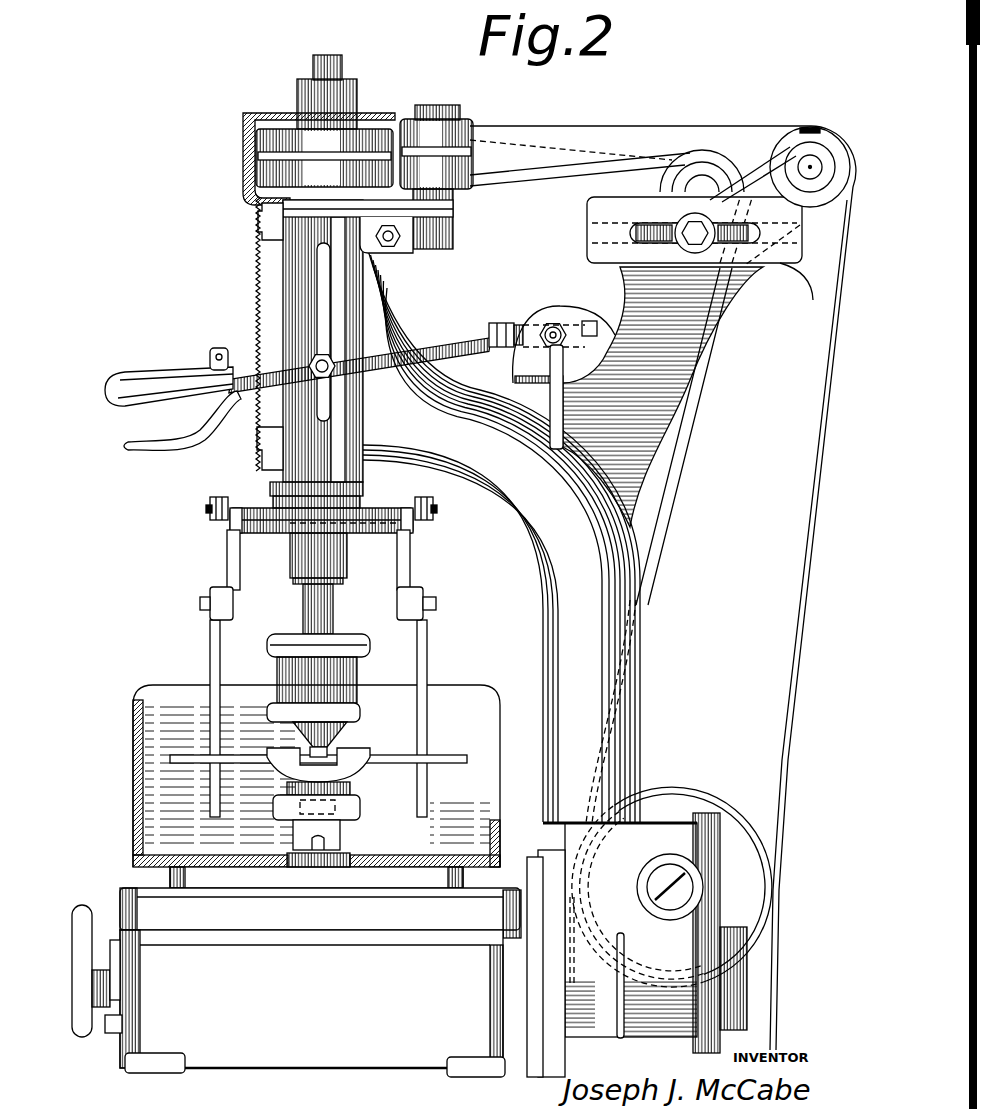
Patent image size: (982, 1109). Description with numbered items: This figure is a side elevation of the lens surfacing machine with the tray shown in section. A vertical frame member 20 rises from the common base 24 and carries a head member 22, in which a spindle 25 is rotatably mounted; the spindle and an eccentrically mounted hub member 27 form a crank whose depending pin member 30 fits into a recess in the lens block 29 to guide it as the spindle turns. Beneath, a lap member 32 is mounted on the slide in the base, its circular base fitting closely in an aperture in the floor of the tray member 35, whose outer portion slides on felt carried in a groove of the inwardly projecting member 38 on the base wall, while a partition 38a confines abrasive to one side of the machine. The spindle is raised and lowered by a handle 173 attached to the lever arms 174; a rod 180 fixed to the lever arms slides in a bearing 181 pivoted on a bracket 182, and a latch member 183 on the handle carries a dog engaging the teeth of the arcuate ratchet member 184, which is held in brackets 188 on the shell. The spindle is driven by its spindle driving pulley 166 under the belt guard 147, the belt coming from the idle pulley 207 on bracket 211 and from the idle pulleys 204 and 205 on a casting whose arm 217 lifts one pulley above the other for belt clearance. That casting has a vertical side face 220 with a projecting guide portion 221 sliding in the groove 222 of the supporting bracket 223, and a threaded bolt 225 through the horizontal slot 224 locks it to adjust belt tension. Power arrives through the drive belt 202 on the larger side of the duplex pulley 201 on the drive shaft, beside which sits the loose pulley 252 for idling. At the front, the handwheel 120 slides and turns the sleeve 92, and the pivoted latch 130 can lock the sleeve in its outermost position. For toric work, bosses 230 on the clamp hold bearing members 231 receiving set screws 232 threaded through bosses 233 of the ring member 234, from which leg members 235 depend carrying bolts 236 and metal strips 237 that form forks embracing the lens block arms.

The spindle driving pulley 166 is at (373, 130).
The belt guard 147 is at (243, 131).
The idle pulley 207 is at (467, 140).
The bracket 211 is at (450, 233).
The head member 22 is at (283, 465).
The bracket 188 is at (262, 212).
The arcuate ratchet member 184 is at (256, 275).
The lever arm 174 is at (430, 340).
The handle 173 is at (127, 380).
The latch member 183 is at (218, 407).
The rod 180 is at (517, 323).
The bearing 181 is at (571, 323).
The bracket 182 is at (537, 363).
The vertical frame member 20 is at (550, 563).
The vertical side face 220 is at (750, 267).
The projecting guide portion 221 is at (653, 230).
The horizontal slot 224 is at (630, 229).
The threaded bolt 225 is at (687, 223).
The groove 222 is at (778, 226).
The supporting bracket 223 is at (793, 263).
The idle pulley 205 is at (703, 160).
The arm 217 is at (768, 158).
The idle pulley 204 is at (827, 140).
The drive belt 202 is at (779, 973).
The duplex pulley 201 is at (717, 800).
The loose pulley 252 is at (767, 840).
The boss 230 is at (240, 492).
The bearing member 231 is at (227, 510).
The set screw 232 is at (227, 523).
The boss 233 is at (230, 527).
The ring member 234 is at (380, 537).
The spindle 25 is at (310, 597).
The hub member 27 is at (297, 677).
The pin member 30 is at (340, 733).
The lens block 29 is at (335, 770).
The tray member 35 is at (133, 862).
The partition 38a is at (487, 705).
The inwardly projecting member 38 is at (203, 880).
The lap member 32 is at (313, 867).
The base 24 is at (312, 1003).
The handwheel 120 is at (78, 907).
The sleeve 92 is at (112, 940).
The pivoted latch 130 is at (113, 1003).
The leg member 235 is at (233, 563).
The bolt 236 is at (203, 610).
The metal strip 237 is at (213, 660).